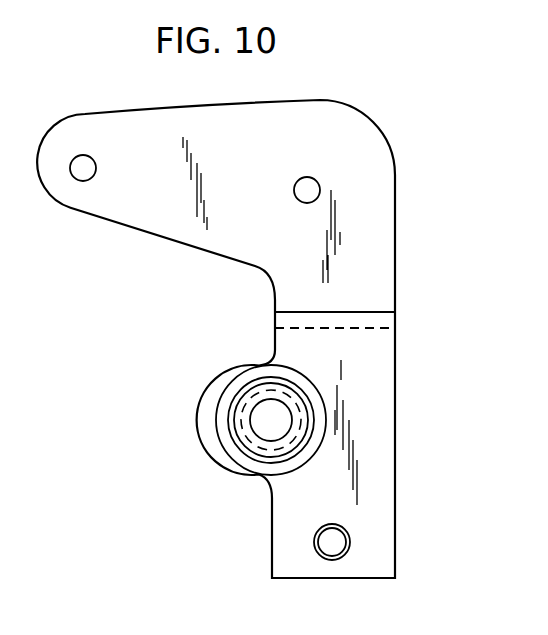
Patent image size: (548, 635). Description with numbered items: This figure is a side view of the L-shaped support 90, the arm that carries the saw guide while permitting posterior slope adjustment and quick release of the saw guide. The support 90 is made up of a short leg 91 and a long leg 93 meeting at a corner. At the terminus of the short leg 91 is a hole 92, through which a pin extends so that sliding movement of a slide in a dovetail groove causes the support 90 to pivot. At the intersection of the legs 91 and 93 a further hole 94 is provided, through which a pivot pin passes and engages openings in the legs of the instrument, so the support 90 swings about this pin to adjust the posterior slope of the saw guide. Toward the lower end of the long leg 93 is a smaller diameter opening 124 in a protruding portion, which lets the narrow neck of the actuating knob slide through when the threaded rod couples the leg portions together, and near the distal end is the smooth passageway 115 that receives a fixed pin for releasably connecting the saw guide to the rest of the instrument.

The L-shaped support 90 is at (411, 213).
The short leg 91 is at (259, 159).
The hole 92 is at (93, 158).
The long leg 93 is at (381, 370).
The hole 94 is at (297, 197).
The smaller diameter opening 124 is at (255, 430).
The passageway 115 is at (314, 541).